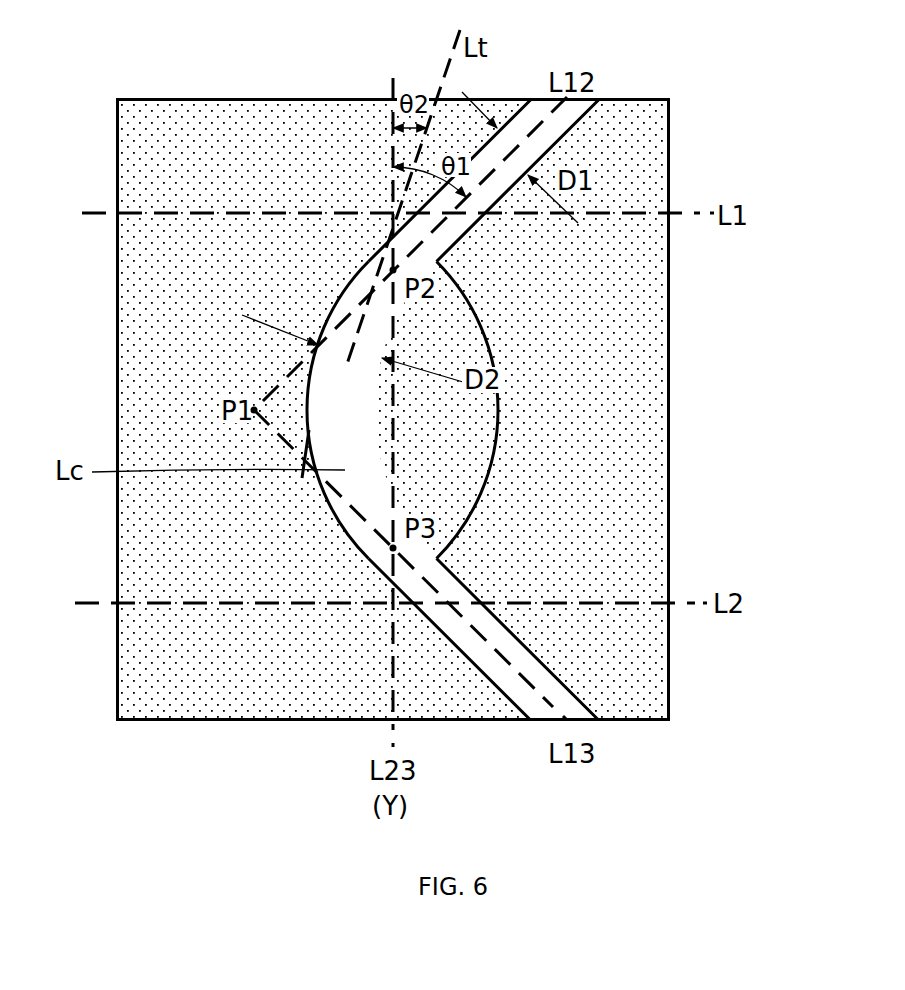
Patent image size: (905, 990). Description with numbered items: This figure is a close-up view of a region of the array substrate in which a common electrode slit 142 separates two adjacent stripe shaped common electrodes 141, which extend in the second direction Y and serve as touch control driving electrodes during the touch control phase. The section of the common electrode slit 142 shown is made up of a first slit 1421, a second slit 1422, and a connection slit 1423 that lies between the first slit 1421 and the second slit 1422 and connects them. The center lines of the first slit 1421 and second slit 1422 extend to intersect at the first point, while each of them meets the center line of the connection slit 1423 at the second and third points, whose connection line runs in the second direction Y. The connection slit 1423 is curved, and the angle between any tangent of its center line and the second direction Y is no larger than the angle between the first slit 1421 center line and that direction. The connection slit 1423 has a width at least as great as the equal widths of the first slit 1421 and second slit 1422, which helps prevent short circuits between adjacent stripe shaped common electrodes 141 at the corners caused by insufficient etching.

The stripe shaped common electrode 141 is at (249, 140).
The common electrode slit 142 is at (583, 410).
The first slit 1421 is at (447, 240).
The second slit 1422 is at (564, 621).
The connection slit 1423 is at (360, 447).